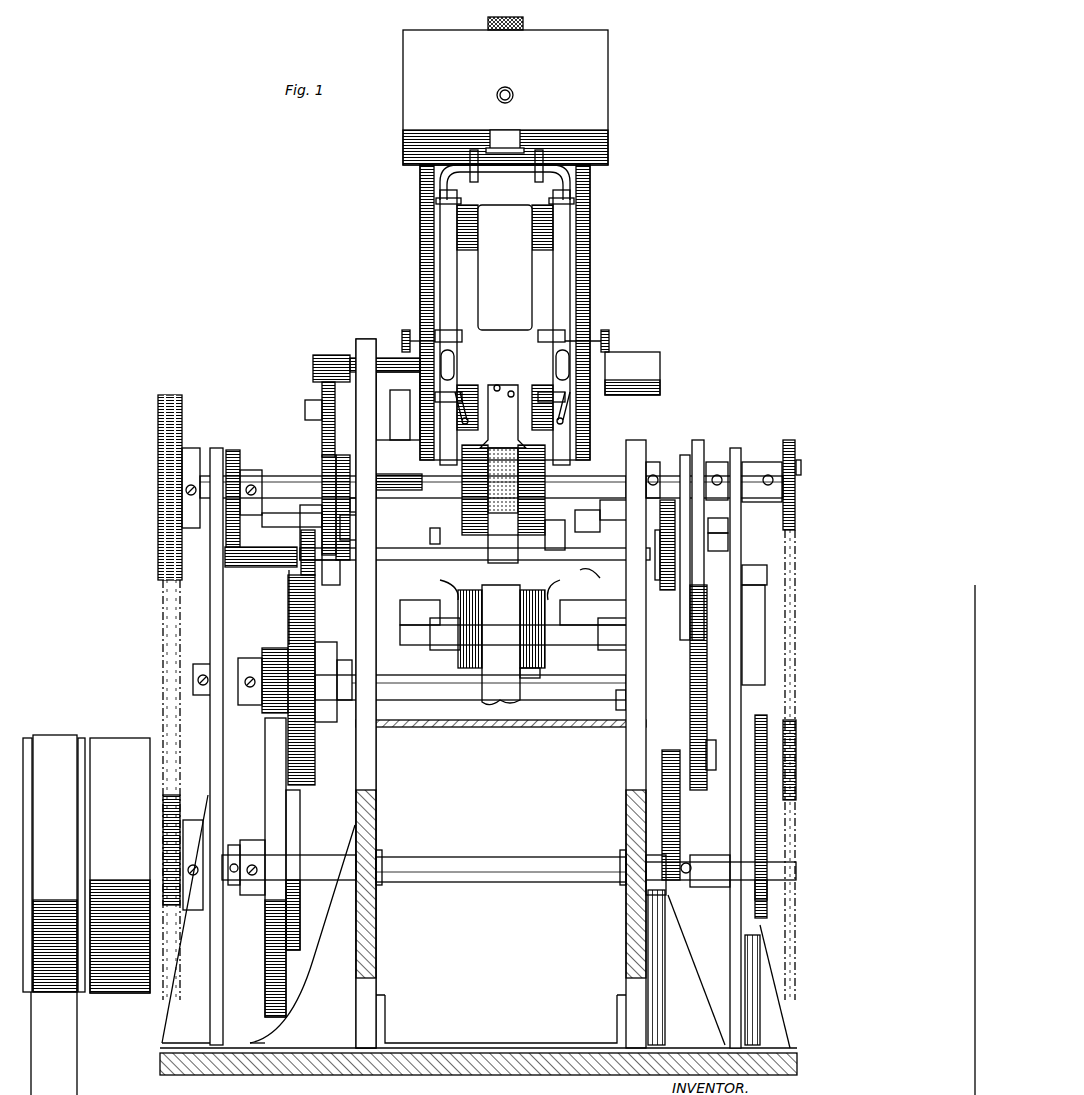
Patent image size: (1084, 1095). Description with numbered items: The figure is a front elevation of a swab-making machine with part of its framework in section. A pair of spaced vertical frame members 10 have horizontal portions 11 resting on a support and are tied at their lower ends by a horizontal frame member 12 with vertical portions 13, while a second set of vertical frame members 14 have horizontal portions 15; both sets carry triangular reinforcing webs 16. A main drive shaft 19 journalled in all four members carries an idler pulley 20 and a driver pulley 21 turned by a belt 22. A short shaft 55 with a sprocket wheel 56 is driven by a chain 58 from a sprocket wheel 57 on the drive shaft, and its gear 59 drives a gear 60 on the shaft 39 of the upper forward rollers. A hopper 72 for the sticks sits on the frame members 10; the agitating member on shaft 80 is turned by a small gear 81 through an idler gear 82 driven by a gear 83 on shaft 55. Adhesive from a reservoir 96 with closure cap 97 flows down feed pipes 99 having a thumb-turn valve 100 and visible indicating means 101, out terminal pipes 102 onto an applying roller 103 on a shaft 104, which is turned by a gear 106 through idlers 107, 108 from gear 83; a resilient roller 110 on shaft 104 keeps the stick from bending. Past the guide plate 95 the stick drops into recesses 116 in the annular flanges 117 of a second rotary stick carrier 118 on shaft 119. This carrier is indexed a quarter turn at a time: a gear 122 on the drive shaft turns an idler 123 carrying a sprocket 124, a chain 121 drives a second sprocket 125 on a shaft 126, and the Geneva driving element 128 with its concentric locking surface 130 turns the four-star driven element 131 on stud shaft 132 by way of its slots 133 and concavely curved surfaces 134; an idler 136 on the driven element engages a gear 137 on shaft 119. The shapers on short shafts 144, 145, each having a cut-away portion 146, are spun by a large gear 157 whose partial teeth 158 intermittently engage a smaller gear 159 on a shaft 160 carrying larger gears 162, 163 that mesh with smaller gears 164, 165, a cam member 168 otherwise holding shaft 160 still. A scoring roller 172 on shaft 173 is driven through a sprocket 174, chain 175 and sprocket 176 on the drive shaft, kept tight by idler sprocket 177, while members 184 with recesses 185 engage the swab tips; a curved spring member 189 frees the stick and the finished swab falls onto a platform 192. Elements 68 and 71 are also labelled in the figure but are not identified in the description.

The vertical frame members 10 is at (376, 775).
The horizontal portions 11 is at (330, 1050).
The horizontal frame member 12 is at (505, 1043).
The vertical portions 13 is at (385, 1010).
The vertical frame members 14 is at (223, 772).
The horizontal portions 15 is at (175, 1040).
The reinforcing webs 16 is at (335, 898).
The main drive shaft 19 is at (575, 857).
The idler pulley 20 is at (82, 738).
The driver pulley 21 is at (122, 738).
The belt 22 is at (50, 735).
The shaft 39 is at (300, 528).
The short shaft 55 is at (290, 463).
The sprocket wheel 56 is at (182, 425).
The sprocket wheel 57 is at (190, 795).
The chain 58 is at (163, 630).
The gear 59 is at (235, 450).
The gear 60 is at (250, 540).
The hub 68 is at (225, 520).
The plate 71 is at (289, 605).
The hopper 72 is at (628, 262).
The shaft 80 is at (380, 360).
The small gear 81 is at (330, 355).
The idler gear 82 is at (322, 390).
The gear 83 is at (322, 448).
The guide plate 95 is at (520, 430).
The reservoir 96 is at (600, 70).
The closure cap 97 is at (525, 22).
The feed pipes 99 is at (445, 232).
The thumb-turn valve 100 is at (606, 325).
The visible indicating means 101 is at (430, 345).
The terminal pipes 102 is at (470, 428).
The applying roller 103 is at (590, 498).
The shaft 104 is at (400, 490).
The gear 106 is at (350, 465).
The idler 107 is at (365, 505).
The idler 108 is at (360, 525).
The resilient roller 110 is at (505, 440).
The recesses 116 is at (510, 555).
The annular flanges 117 is at (520, 545).
The second rotary stick carrier 118 is at (548, 540).
The shaft 119 is at (596, 575).
The chain 121 is at (783, 545).
The gear 122 is at (767, 905).
The idler 123 is at (760, 715).
The sprocket 124 is at (783, 800).
The second sprocket 125 is at (783, 450).
The shaft 126 is at (801, 468).
The driving element 128 is at (698, 440).
The concentric locking surface 130 is at (685, 455).
The driven element 131 is at (740, 525).
The stud shaft 132 is at (590, 515).
The slots 133 is at (740, 538).
The concavely curved surfaces 134 is at (650, 512).
The idler 136 is at (665, 500).
The gear 137 is at (665, 600).
The shaft 144 is at (262, 567).
The shaft 145 is at (752, 565).
The cut-away portion 146 is at (450, 530).
The large gear 157 is at (265, 808).
The teeth 158 is at (262, 1035).
The smaller gear 159 is at (272, 648).
The shaft 160 is at (425, 665).
The gear 162 is at (315, 605).
The gear 163 is at (730, 600).
The gear 164 is at (330, 570).
The gear 165 is at (760, 592).
The cam member 168 is at (300, 830).
The scoring roller 172 is at (535, 678).
The shaft 173 is at (600, 645).
The sprocket 174 is at (730, 618).
The chain 175 is at (630, 703).
The sprocket 176 is at (680, 845).
The idler sprocket 177 is at (680, 792).
The members 184 is at (410, 620).
The recesses 185 is at (504, 624).
The curved spring member 189 is at (512, 681).
The platform 192 is at (480, 727).